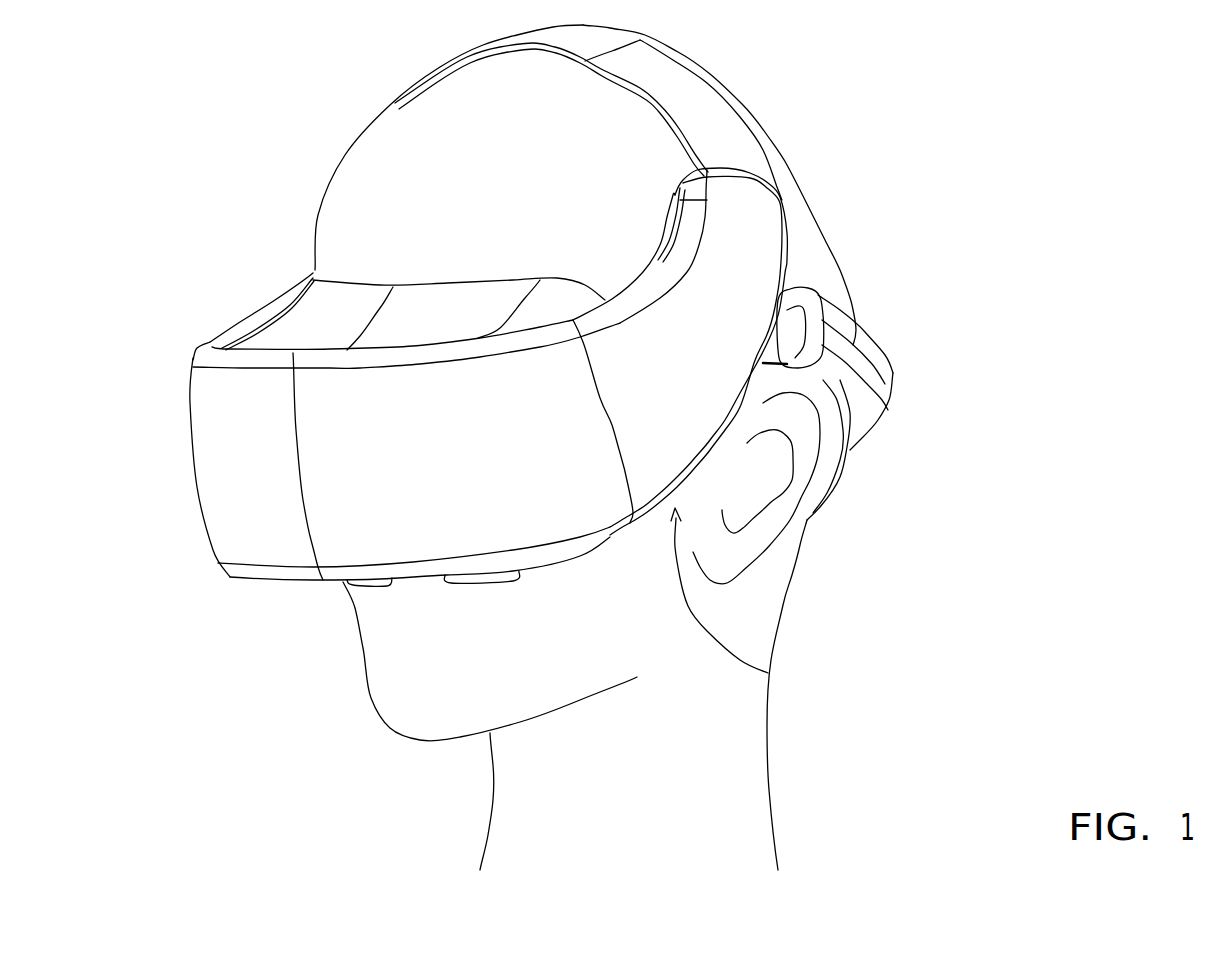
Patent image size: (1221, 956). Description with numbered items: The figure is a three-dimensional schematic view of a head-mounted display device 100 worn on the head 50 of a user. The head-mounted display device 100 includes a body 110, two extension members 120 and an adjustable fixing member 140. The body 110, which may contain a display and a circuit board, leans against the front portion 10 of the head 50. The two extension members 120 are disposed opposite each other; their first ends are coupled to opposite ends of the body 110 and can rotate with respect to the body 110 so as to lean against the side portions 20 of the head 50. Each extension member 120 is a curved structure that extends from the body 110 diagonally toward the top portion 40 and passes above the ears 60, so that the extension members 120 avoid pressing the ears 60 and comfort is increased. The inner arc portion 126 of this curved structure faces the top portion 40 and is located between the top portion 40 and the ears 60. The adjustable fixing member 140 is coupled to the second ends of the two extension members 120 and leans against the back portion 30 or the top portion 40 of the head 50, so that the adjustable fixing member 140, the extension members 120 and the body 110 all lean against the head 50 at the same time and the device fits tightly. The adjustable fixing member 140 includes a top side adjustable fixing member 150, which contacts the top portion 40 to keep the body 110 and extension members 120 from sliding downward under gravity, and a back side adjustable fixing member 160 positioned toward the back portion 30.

The front portion 10 is at (348, 541).
The side portions 20 is at (768, 673).
The back portion 30 is at (869, 289).
The top portion 40 is at (445, 114).
The head 50 is at (757, 610).
The ears 60 is at (818, 480).
The head-mounted display device 100 is at (649, 313).
The body 110 is at (225, 468).
The extension members 120 is at (757, 242).
The inner arc portion 126 is at (644, 259).
The adjustable fixing member 140 is at (1136, 147).
The top side adjustable fixing member 150 is at (688, 92).
The back side adjustable fixing member 160 is at (877, 387).